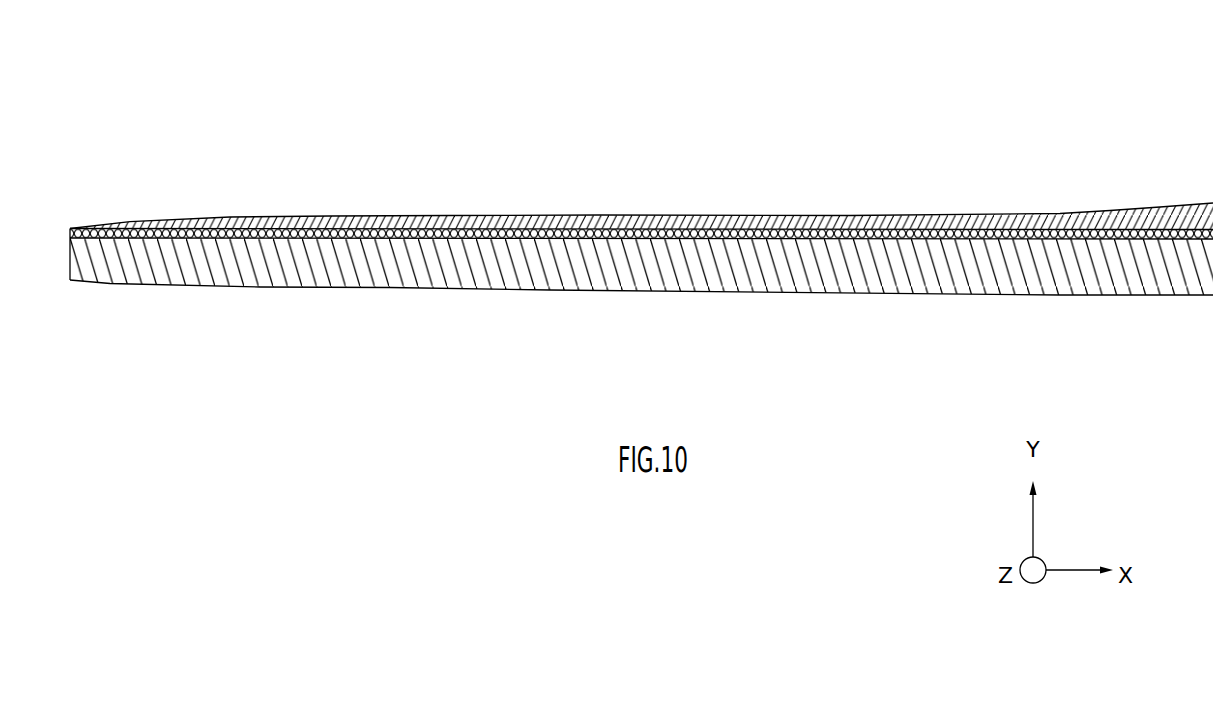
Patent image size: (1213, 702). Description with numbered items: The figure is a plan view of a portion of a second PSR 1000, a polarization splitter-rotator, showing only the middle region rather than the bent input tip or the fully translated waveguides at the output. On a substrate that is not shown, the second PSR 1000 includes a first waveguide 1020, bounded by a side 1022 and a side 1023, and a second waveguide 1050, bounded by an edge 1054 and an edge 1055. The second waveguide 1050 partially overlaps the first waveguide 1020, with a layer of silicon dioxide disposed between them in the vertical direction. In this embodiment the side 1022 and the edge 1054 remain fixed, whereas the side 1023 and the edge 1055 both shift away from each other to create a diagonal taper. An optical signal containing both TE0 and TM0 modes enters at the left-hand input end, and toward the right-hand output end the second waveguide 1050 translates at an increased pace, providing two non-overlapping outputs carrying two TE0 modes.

The second PSR 1000 is at (641, 198).
The second waveguide 1050 is at (641, 189).
The edge 1055 is at (593, 217).
The side 1022 is at (641, 247).
The edge 1054 is at (563, 237).
The first waveguide 1020 is at (641, 301).
The side 1023 is at (370, 287).